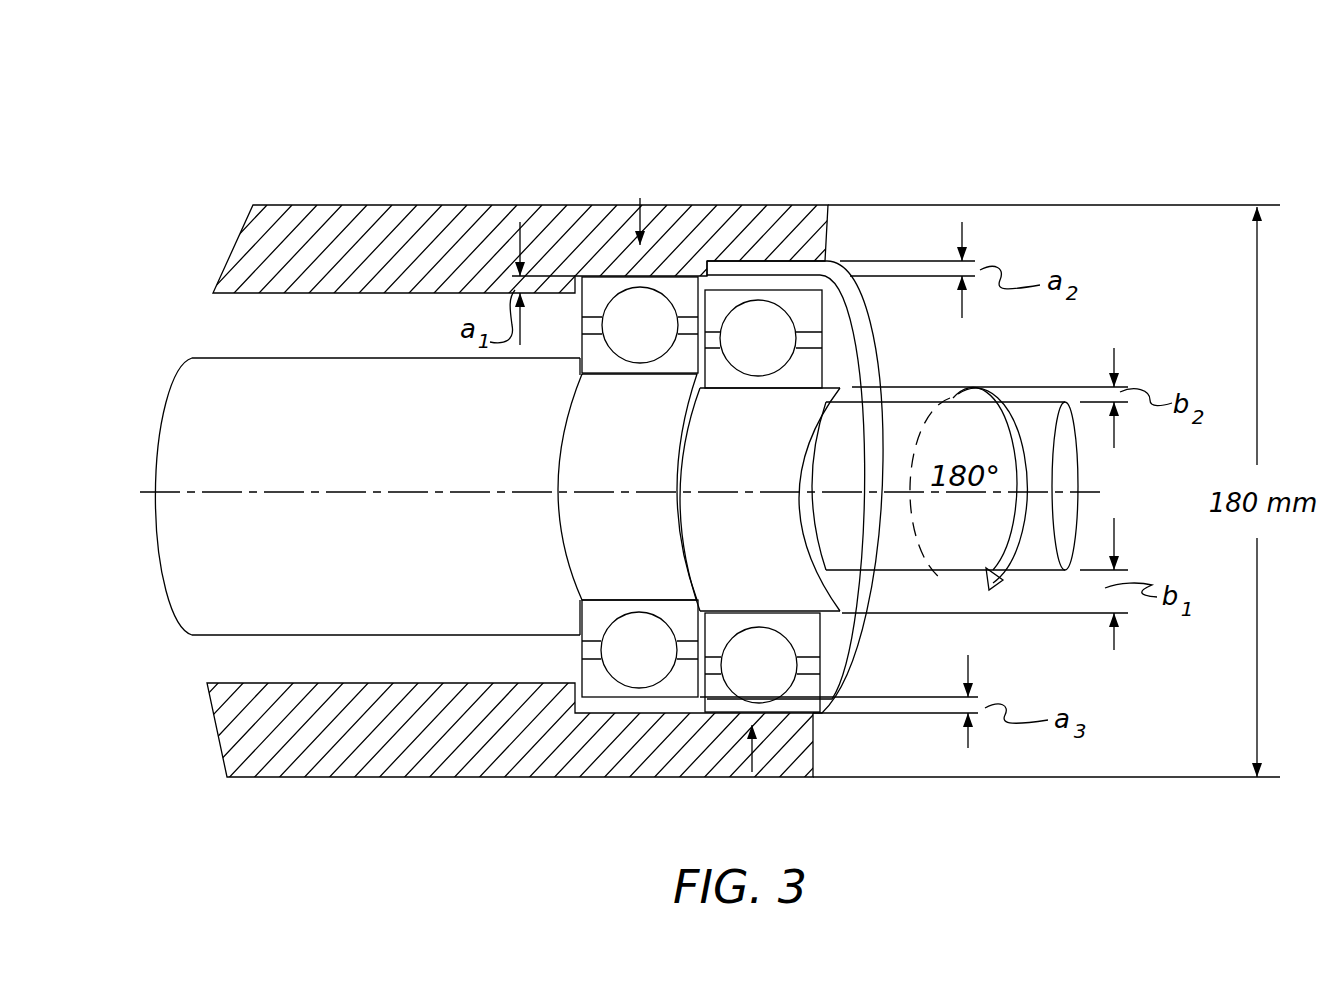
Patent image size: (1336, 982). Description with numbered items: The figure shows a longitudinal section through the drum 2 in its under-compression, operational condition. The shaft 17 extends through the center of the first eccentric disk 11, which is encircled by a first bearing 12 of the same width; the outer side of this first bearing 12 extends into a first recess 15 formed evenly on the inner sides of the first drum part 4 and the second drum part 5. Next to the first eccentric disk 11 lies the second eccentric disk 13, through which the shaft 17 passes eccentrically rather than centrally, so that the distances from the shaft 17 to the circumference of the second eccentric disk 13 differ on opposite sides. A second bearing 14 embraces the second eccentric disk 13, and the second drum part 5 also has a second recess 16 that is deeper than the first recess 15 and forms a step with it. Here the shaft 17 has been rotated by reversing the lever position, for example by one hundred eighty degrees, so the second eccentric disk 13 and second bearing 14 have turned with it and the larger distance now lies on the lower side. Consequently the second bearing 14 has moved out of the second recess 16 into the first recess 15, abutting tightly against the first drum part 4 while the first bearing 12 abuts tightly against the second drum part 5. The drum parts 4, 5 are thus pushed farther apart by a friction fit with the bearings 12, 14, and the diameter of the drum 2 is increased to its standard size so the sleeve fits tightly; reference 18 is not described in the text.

The drum 2 is at (284, 152).
The bearing unit 18 is at (598, 128).
The second drum part 5 is at (427, 237).
The first drum part 4 is at (453, 765).
The shaft 17 is at (200, 415).
The first eccentric disk 11 is at (580, 400).
The second eccentric disk 13 is at (778, 482).
The first recess 15 is at (582, 278).
The second bearing 14 is at (845, 380).
The first bearing 12 is at (686, 290).
The second recess 16 is at (788, 268).